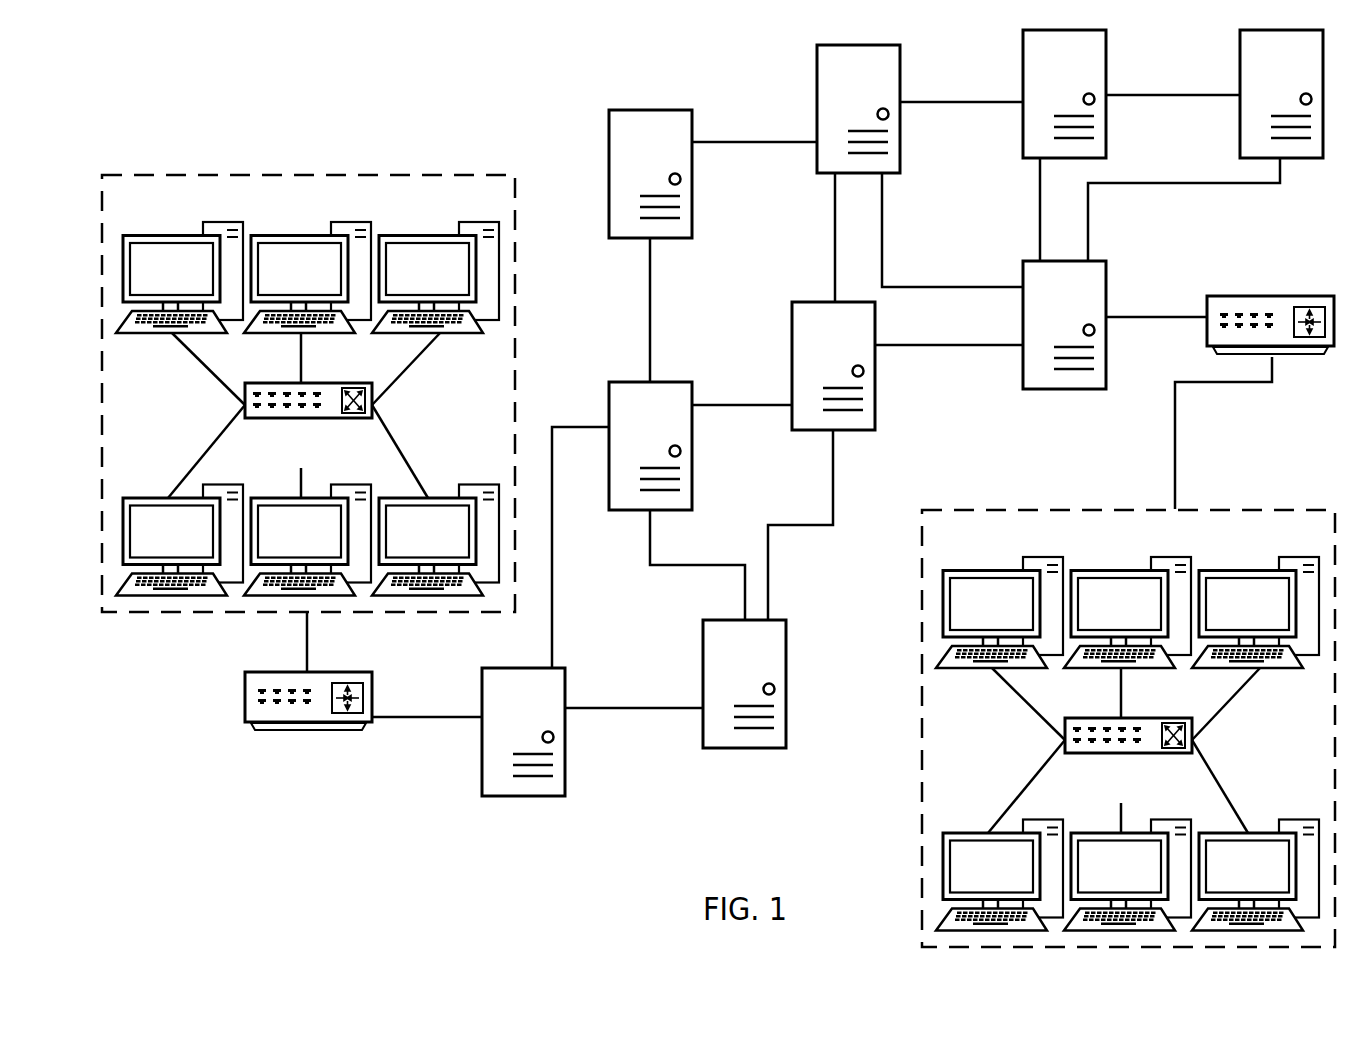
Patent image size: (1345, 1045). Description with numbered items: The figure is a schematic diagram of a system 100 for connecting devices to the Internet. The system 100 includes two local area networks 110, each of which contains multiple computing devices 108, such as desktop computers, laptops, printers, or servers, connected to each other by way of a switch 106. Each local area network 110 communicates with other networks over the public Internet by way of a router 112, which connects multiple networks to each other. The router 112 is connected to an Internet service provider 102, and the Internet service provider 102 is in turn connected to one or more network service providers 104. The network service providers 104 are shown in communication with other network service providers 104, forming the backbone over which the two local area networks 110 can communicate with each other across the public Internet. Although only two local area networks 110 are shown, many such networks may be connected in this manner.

The system 100 is at (322, 103).
The Internet service provider 102 is at (795, 557).
The network service provider 104 is at (966, 418).
The switch 106 is at (325, 454).
The computing device 108 is at (717, 576).
The local area network 110 is at (387, 204).
The router 112 is at (789, 559).